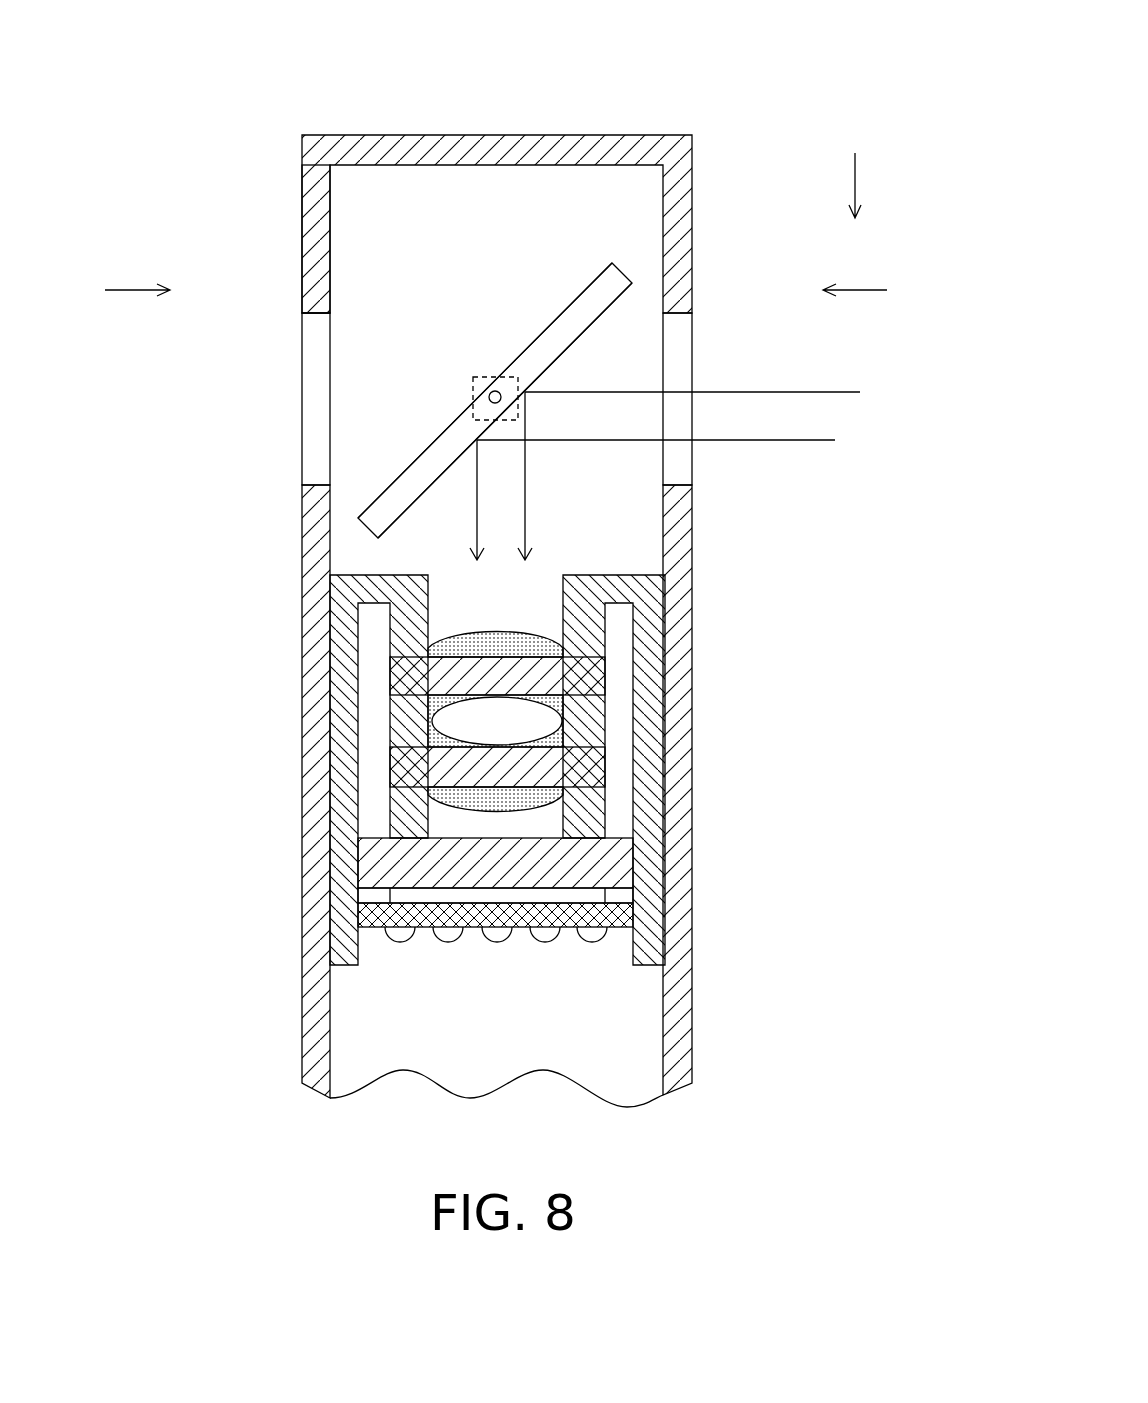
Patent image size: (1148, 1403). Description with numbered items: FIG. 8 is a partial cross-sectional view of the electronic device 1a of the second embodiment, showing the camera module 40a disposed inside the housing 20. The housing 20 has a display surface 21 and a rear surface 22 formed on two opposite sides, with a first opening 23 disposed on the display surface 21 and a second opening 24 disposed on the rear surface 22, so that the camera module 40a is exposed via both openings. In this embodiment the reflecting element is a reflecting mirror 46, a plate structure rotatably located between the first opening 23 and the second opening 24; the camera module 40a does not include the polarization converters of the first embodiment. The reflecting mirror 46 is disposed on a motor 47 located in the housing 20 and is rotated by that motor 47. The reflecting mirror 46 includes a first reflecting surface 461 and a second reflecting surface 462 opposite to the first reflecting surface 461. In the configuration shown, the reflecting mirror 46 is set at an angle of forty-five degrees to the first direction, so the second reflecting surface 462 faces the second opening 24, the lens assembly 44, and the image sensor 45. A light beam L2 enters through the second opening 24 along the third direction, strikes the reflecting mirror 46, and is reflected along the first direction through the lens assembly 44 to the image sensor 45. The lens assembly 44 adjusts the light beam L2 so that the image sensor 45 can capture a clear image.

The electronic device 1a is at (800, 42).
The housing 20 is at (302, 790).
The display surface 21 is at (302, 232).
The rear surface 22 is at (692, 232).
The first opening 23 is at (315, 378).
The second opening 24 is at (680, 472).
The lens assembly 44 is at (603, 668).
The image sensor 45 is at (625, 857).
The reflecting mirror 46 is at (425, 445).
The first reflecting surface 461 is at (557, 318).
The second reflecting surface 462 is at (598, 325).
The motor 47 is at (495, 377).
The camera module 40a is at (595, 977).
The light beam L2 is at (858, 392).